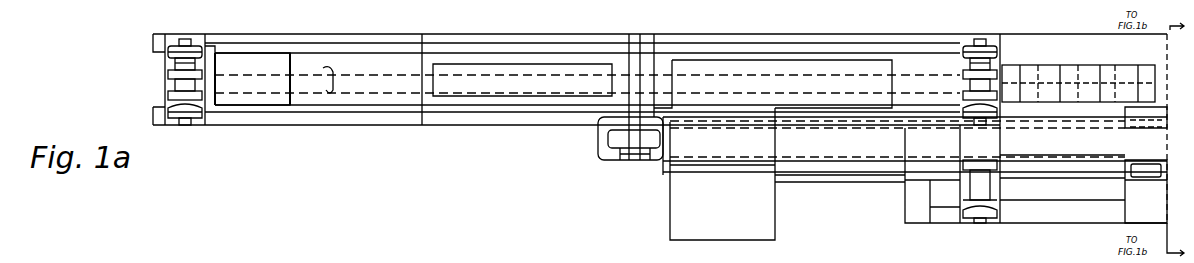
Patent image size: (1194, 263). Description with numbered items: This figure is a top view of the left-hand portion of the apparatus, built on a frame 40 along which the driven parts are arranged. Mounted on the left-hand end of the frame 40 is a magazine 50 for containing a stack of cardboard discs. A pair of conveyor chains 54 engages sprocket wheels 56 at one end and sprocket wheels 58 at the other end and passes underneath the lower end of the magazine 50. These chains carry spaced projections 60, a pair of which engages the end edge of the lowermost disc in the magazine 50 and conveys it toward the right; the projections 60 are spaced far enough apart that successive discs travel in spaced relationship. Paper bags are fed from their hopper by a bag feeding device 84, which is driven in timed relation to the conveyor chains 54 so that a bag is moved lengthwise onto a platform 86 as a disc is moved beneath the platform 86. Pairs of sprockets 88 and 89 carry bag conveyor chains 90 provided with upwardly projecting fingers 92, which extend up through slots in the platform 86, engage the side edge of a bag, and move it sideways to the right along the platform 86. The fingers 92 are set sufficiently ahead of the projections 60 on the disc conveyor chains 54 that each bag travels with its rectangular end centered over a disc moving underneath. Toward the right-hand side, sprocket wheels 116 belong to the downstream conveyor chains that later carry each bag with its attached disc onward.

The frame 40 is at (372, 21).
The magazine 50 is at (290, 100).
The conveyor chains 54 is at (238, 64).
The sprocket wheels 56 is at (172, 92).
The sprocket wheels 58 is at (1000, 105).
The spaced projections 60 is at (334, 62).
The bag feeding device 84 is at (776, 224).
The platform 86 is at (692, 66).
The sprockets 88 is at (598, 152).
The sprockets 89 is at (1000, 126).
The bag conveyor chains 90 is at (812, 134).
The upwardly projecting fingers 92 is at (668, 158).
The sprocket wheels 116 is at (1132, 160).